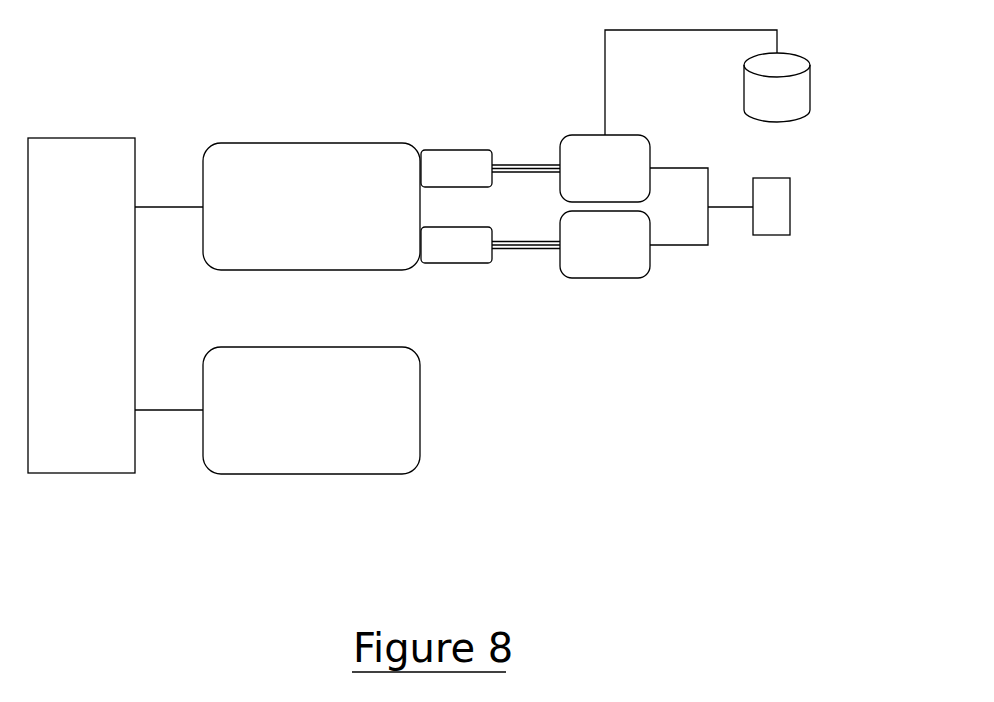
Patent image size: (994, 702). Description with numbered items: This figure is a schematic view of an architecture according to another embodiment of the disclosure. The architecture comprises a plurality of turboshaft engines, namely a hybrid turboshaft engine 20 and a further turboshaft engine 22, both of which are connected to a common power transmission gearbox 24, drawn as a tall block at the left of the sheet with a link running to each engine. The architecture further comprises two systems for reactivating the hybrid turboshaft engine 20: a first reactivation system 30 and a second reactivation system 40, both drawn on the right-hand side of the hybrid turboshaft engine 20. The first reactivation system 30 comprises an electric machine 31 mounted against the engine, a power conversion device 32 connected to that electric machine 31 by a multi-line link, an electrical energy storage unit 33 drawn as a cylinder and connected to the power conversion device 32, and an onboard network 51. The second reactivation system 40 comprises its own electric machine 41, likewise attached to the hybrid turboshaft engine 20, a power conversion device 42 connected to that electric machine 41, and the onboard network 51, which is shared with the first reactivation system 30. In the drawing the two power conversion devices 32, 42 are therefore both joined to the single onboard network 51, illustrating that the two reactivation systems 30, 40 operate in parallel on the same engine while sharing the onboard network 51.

The hybrid turboshaft engine 20 is at (316, 143).
The turboshaft engine 22 is at (306, 474).
The power transmission gearbox 24 is at (88, 140).
The first reactivation system 30 is at (530, 152).
The electric machine 31 is at (466, 150).
The power conversion device 32 is at (650, 158).
The electrical energy storage unit 33 is at (810, 83).
The second reactivation system 40 is at (524, 257).
The electric machine 41 is at (462, 265).
The power conversion device 42 is at (650, 262).
The onboard network 51 is at (792, 203).